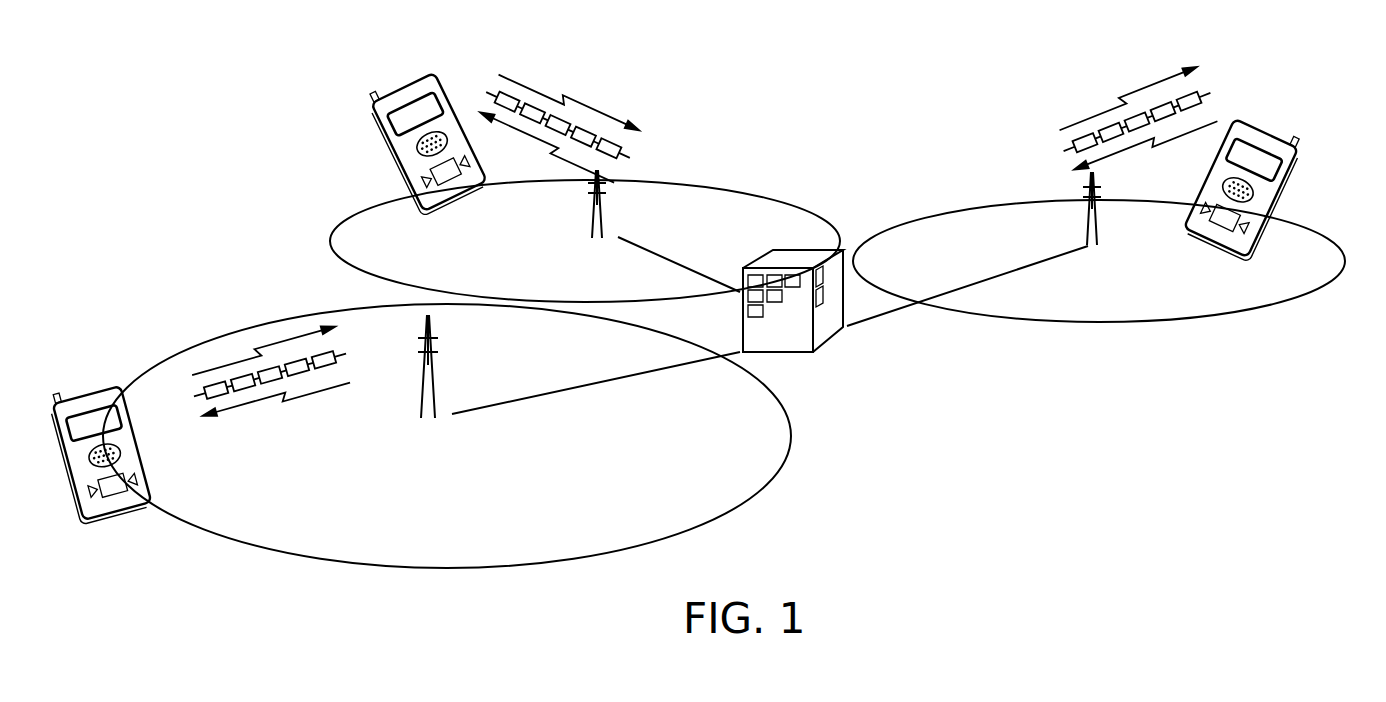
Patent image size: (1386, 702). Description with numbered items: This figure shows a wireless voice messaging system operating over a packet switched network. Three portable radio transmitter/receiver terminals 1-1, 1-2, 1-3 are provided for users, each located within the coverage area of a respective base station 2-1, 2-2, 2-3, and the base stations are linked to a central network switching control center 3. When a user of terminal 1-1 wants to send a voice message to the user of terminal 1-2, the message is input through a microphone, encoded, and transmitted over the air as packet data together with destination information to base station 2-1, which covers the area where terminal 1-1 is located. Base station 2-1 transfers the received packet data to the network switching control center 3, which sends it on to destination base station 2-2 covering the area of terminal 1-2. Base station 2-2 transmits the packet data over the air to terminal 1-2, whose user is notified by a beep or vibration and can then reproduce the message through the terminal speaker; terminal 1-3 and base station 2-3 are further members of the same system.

The portable radio transmitter/receiver terminal 1-1 is at (148, 472).
The portable radio transmitter/receiver terminal 1-2 is at (443, 77).
The portable radio transmitter/receiver terminal 1-3 is at (1288, 182).
The base station 2-1 is at (433, 363).
The destination base station 2-2 is at (600, 213).
The base station 2-3 is at (1095, 233).
The network switching control center 3 is at (847, 273).